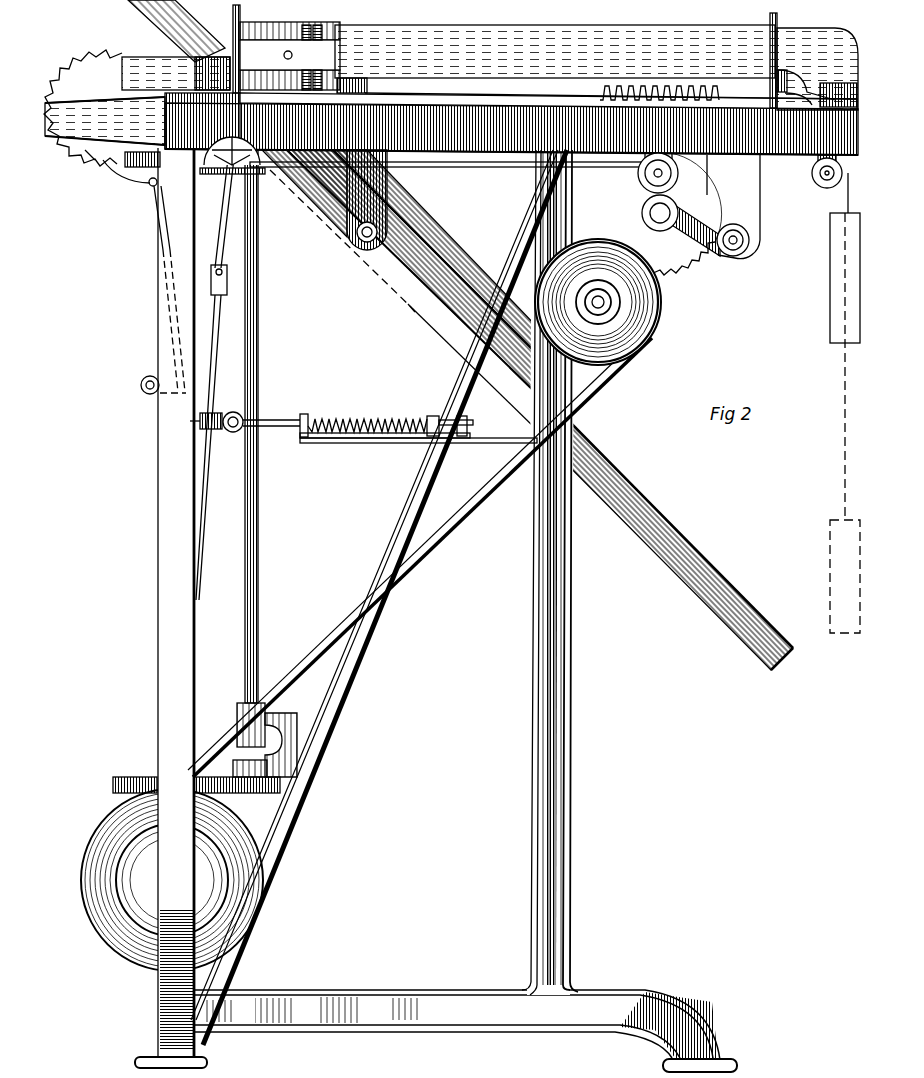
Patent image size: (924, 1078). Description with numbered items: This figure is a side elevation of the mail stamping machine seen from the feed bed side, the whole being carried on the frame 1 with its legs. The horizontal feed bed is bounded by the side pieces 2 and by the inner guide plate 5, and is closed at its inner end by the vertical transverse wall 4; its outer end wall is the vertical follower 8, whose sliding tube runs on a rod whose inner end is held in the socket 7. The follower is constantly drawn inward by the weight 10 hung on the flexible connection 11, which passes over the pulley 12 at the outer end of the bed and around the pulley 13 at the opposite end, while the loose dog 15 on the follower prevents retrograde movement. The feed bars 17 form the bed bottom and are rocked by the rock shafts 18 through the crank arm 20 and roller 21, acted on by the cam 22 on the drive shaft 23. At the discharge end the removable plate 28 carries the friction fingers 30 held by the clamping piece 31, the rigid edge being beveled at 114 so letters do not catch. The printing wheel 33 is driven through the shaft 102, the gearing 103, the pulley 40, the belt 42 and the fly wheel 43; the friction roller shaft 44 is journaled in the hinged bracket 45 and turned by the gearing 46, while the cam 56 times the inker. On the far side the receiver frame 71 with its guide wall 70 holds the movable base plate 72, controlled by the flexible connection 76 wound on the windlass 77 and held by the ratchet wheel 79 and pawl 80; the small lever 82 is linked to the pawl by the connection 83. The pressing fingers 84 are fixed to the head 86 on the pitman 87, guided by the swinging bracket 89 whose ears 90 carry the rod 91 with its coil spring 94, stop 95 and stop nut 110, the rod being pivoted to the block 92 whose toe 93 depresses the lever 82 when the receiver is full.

The frame 1 is at (594, 686).
The side pieces 2 is at (541, 150).
The vertical transverse wall 4 is at (233, 18).
The longitudinal horizontal guide plate 5 is at (540, 58).
The socket 7 is at (105, 121).
The vertical follower 8 is at (770, 57).
The weight 10 is at (830, 270).
The flexible connection 11 is at (472, 167).
The pulley 12 is at (822, 186).
The pulley 13 is at (216, 173).
The loose dog 15 is at (785, 22).
The feed bars 17 is at (547, 103).
The rock shafts 18 is at (740, 250).
The lateral crank arm 20 is at (688, 220).
The roller 21 is at (646, 218).
The cam 22 is at (680, 174).
The drive shaft 23 is at (653, 177).
The vertical plate 28 is at (296, 30).
The flexible strips or fingers 30 is at (243, 24).
The clamping piece 31 is at (311, 28).
The printing wheel 33 is at (176, 73).
The pulley 40 is at (650, 337).
The belt 42 is at (466, 512).
The weighted fly wheel 43 is at (267, 902).
The vertical shaft 44 is at (258, 325).
The bracket 45 is at (290, 730).
The gearing 46 is at (131, 776).
The cam 56 is at (128, 165).
The inner longitudinal guide wall 70 is at (467, 257).
The rigid frame 71 is at (663, 525).
The movable base plate 72 is at (466, 236).
The flexible connection 76 is at (333, 235).
The vertical windlass 77 is at (83, 108).
The ratchet wheel 79 is at (83, 152).
The pawl 80 is at (142, 181).
The small lever 82 is at (148, 395).
The connection 83 is at (168, 311).
The pressing fingers 84 is at (230, 228).
The horizontal transverse head 86 is at (223, 284).
The pitman 87 is at (213, 378).
The swinging hanger or bracket 89 is at (505, 444).
The perforated ears 90 is at (305, 414).
The rod 91 is at (287, 418).
The block 92 is at (233, 433).
The toe 93 is at (200, 428).
The expansive coil spring 94 is at (375, 418).
The stop 95 is at (420, 439).
The shaft 102 is at (612, 302).
The gearing 103 is at (700, 262).
The stop nut 110 is at (473, 422).
The beveled edge 114 is at (292, 123).